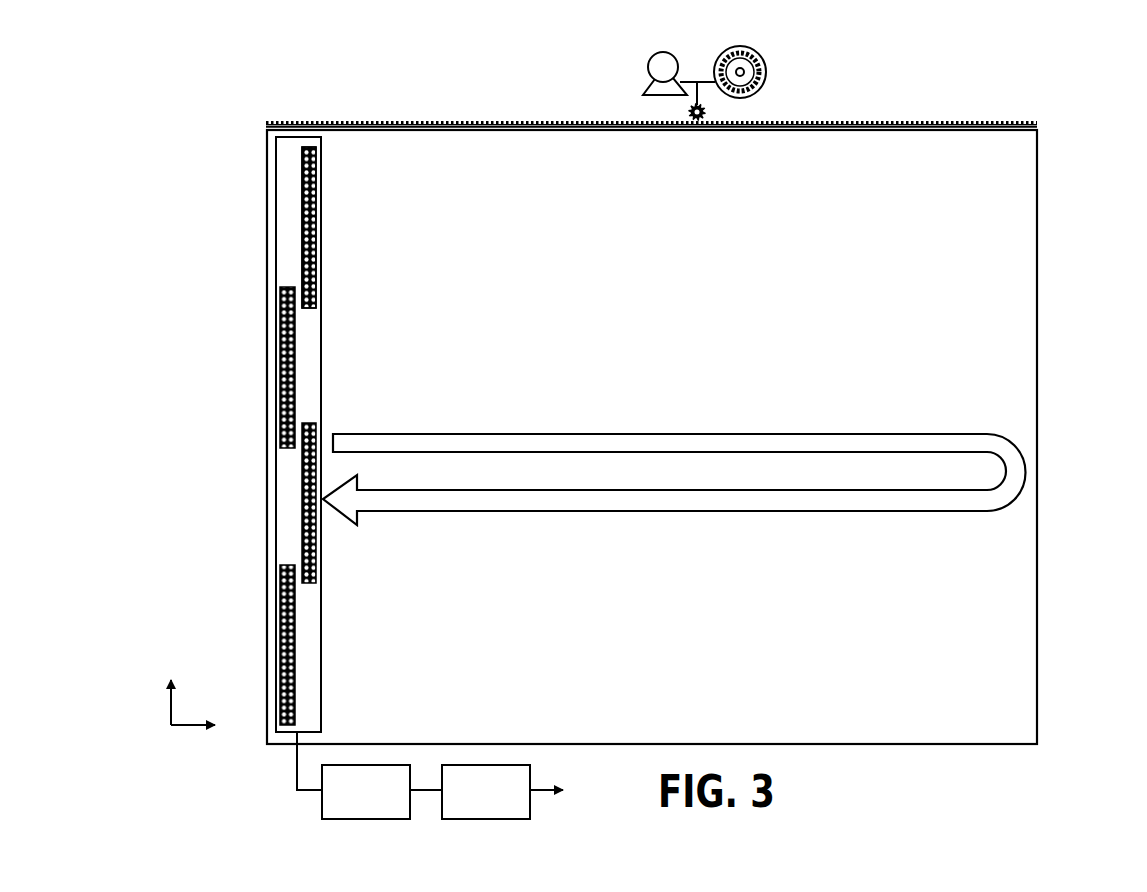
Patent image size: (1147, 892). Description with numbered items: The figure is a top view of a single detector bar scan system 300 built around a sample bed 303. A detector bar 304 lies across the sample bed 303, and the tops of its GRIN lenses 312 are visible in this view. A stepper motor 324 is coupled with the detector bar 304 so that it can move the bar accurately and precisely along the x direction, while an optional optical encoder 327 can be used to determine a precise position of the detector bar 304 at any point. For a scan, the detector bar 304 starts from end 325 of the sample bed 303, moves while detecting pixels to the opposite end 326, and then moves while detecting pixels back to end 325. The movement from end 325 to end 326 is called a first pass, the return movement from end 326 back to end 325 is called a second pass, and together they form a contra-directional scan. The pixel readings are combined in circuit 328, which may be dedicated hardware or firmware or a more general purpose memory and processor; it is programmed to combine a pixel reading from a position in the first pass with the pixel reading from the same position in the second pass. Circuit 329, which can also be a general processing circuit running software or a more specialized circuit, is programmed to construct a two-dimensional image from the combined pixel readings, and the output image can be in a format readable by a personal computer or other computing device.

The single detector bar scan system 300 is at (338, 66).
The sample bed 303 is at (997, 169).
The detector bar 304 is at (320, 162).
The GRIN lenses 312 is at (320, 195).
The stepper motor 324 is at (649, 60).
The end 325 is at (267, 444).
The opposite end 326 is at (1037, 424).
The optical encoder 327 is at (766, 66).
The circuit 328 is at (382, 804).
The circuit 329 is at (502, 804).